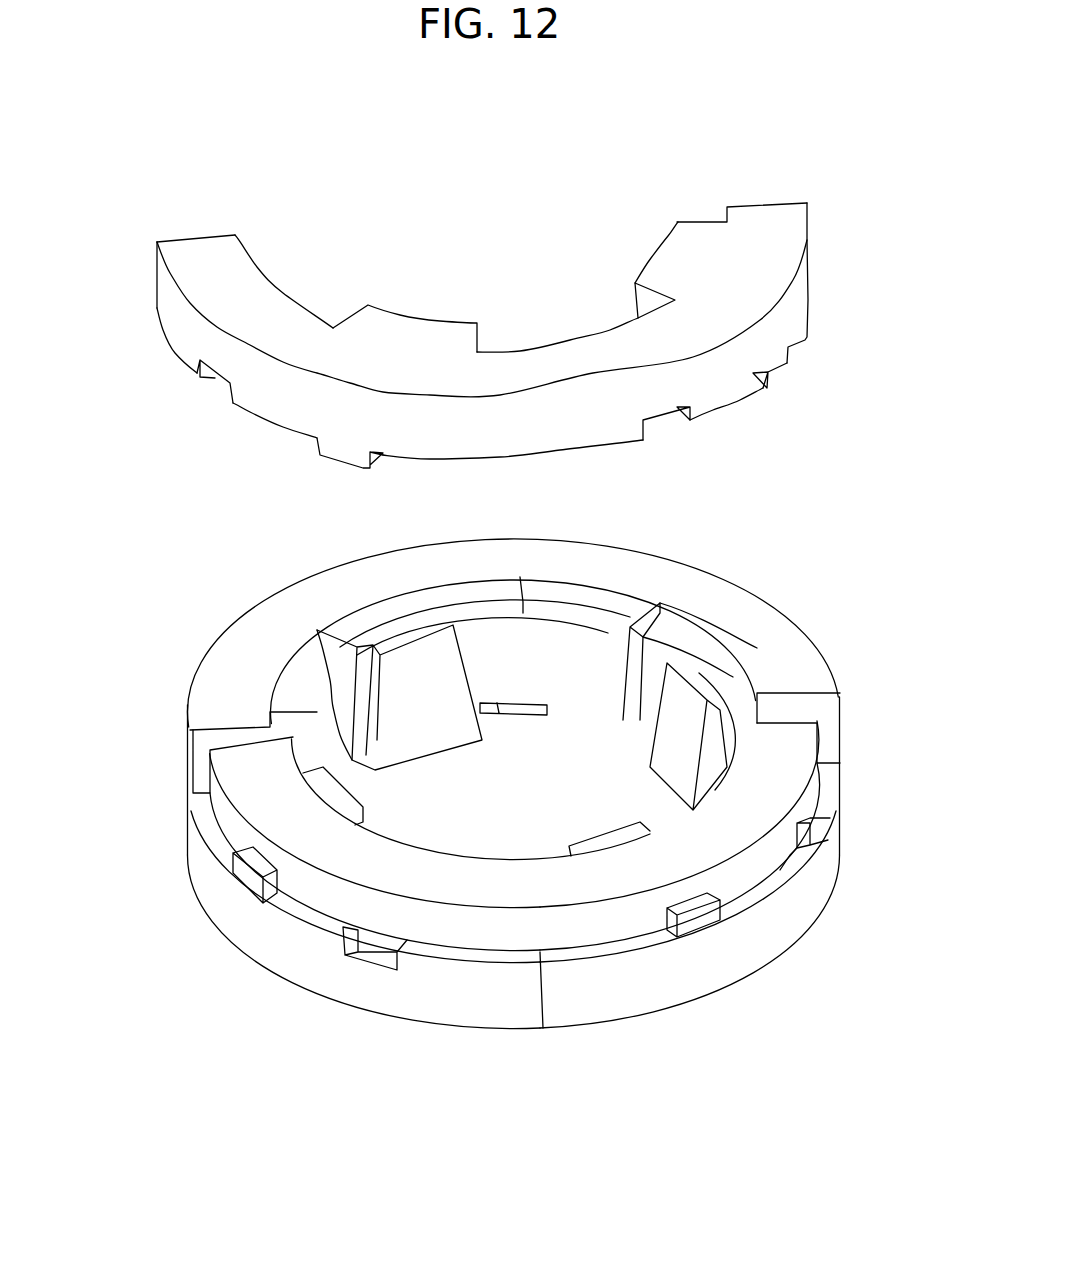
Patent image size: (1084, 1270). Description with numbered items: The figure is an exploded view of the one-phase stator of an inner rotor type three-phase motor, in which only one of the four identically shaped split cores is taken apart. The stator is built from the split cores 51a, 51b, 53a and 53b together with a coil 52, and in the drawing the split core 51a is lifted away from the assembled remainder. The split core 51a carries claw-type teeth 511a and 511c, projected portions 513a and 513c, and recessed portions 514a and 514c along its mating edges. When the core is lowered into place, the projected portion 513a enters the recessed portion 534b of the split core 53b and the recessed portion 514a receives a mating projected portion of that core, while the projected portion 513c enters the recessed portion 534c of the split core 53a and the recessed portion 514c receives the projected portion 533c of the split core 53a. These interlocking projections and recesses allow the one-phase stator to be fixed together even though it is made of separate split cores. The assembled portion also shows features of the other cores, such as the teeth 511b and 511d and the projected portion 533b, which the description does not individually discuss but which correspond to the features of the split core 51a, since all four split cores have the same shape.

The split core 51a is at (763, 220).
The split core 51b is at (693, 592).
The claw-type tooth 511a is at (688, 260).
The projection 511b is at (333, 700).
The claw-type tooth 511c is at (430, 317).
The projection 511d is at (567, 690).
The projected portion 513a is at (795, 362).
The projected portion 513c is at (337, 448).
The recessed portion 514a is at (660, 420).
The recessed portion 514c is at (207, 380).
The coil 52 is at (690, 652).
The split core 53a is at (420, 1000).
The split core 53b is at (760, 925).
The cutout 533b is at (697, 923).
The projected portion 533c is at (243, 877).
The recessed portion 534b is at (800, 847).
The recessed portion 534c is at (367, 955).